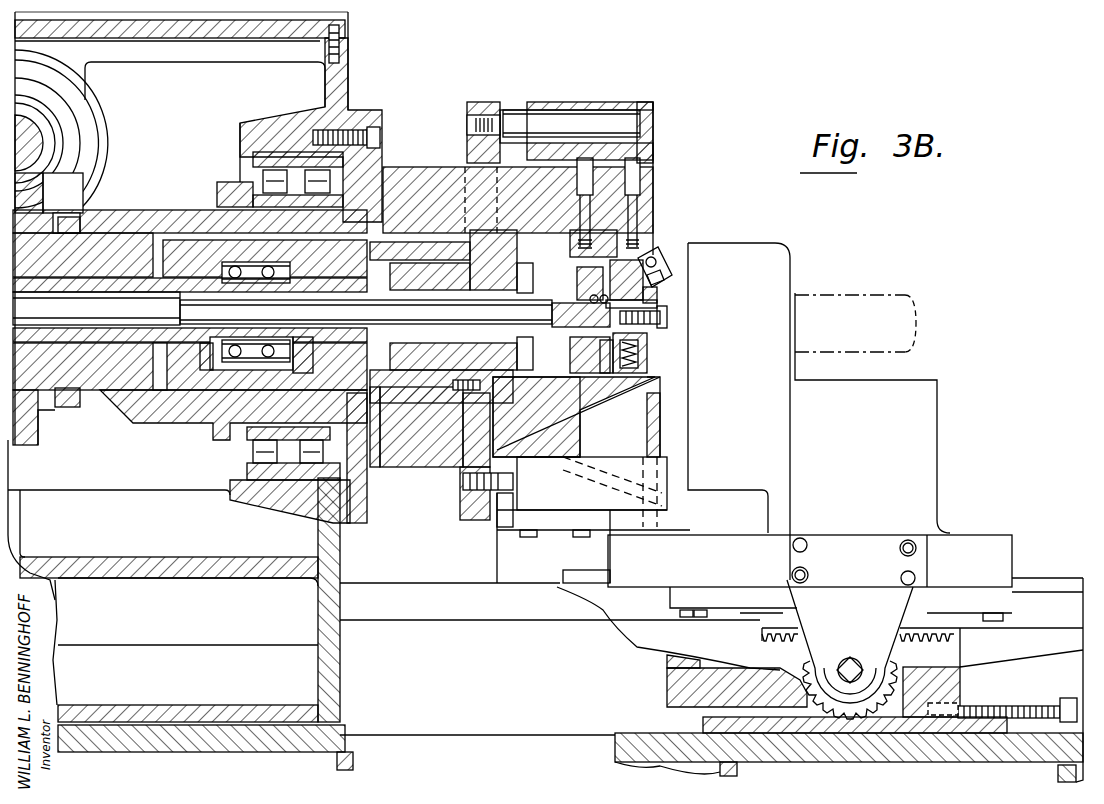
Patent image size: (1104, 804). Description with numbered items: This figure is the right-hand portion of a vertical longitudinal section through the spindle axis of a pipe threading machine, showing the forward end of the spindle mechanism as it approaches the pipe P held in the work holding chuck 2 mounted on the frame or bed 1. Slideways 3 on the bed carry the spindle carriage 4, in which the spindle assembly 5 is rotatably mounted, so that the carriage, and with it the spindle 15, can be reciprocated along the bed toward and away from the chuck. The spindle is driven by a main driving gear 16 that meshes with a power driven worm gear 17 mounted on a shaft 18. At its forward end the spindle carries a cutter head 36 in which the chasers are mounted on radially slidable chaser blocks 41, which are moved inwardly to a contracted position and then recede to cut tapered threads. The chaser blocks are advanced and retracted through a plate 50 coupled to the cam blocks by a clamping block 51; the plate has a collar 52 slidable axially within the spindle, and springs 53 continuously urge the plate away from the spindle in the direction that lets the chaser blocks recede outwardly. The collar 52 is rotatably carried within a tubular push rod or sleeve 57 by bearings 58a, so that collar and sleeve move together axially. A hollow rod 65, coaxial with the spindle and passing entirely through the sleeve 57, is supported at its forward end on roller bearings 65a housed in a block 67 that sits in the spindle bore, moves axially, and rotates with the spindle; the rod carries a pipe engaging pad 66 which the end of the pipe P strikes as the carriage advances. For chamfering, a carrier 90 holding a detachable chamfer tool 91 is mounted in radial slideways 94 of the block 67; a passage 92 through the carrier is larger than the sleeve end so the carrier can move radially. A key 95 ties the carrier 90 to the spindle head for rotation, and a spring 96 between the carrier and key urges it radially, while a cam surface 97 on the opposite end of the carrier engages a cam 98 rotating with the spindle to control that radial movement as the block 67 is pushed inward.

The frame or bed 1 is at (787, 763).
The work holding chuck 2 is at (793, 262).
The slideways 3 is at (484, 612).
The spindle carriage 4 is at (342, 84).
The spindle assembly 5 is at (188, 428).
The spindle 15 is at (133, 427).
The main driving gear 16 is at (32, 428).
The worm gear 17 is at (52, 143).
The shaft 18 is at (50, 118).
The cutter head 36 is at (657, 177).
The chaser block 41 is at (655, 389).
The plate 50 is at (478, 108).
The clamping block 51 is at (514, 503).
The collar 52 is at (425, 393).
The springs 53 is at (585, 122).
The tubular push rod or sleeve 57 is at (135, 255).
The bearings 58a is at (208, 255).
The hollow rod 65 is at (328, 338).
The roller bearings 65a is at (600, 268).
The pipe engaging pad 66 is at (655, 314).
The block 67 is at (585, 270).
The carrier 90 is at (655, 252).
The chamfer tool 91 is at (640, 292).
The passage 92 is at (648, 302).
The radial slideways 94 is at (648, 355).
The key 95 is at (580, 374).
The spring 96 is at (650, 368).
The cam surface 97 is at (646, 247).
The cam 98 is at (604, 232).
The pipe P is at (873, 292).